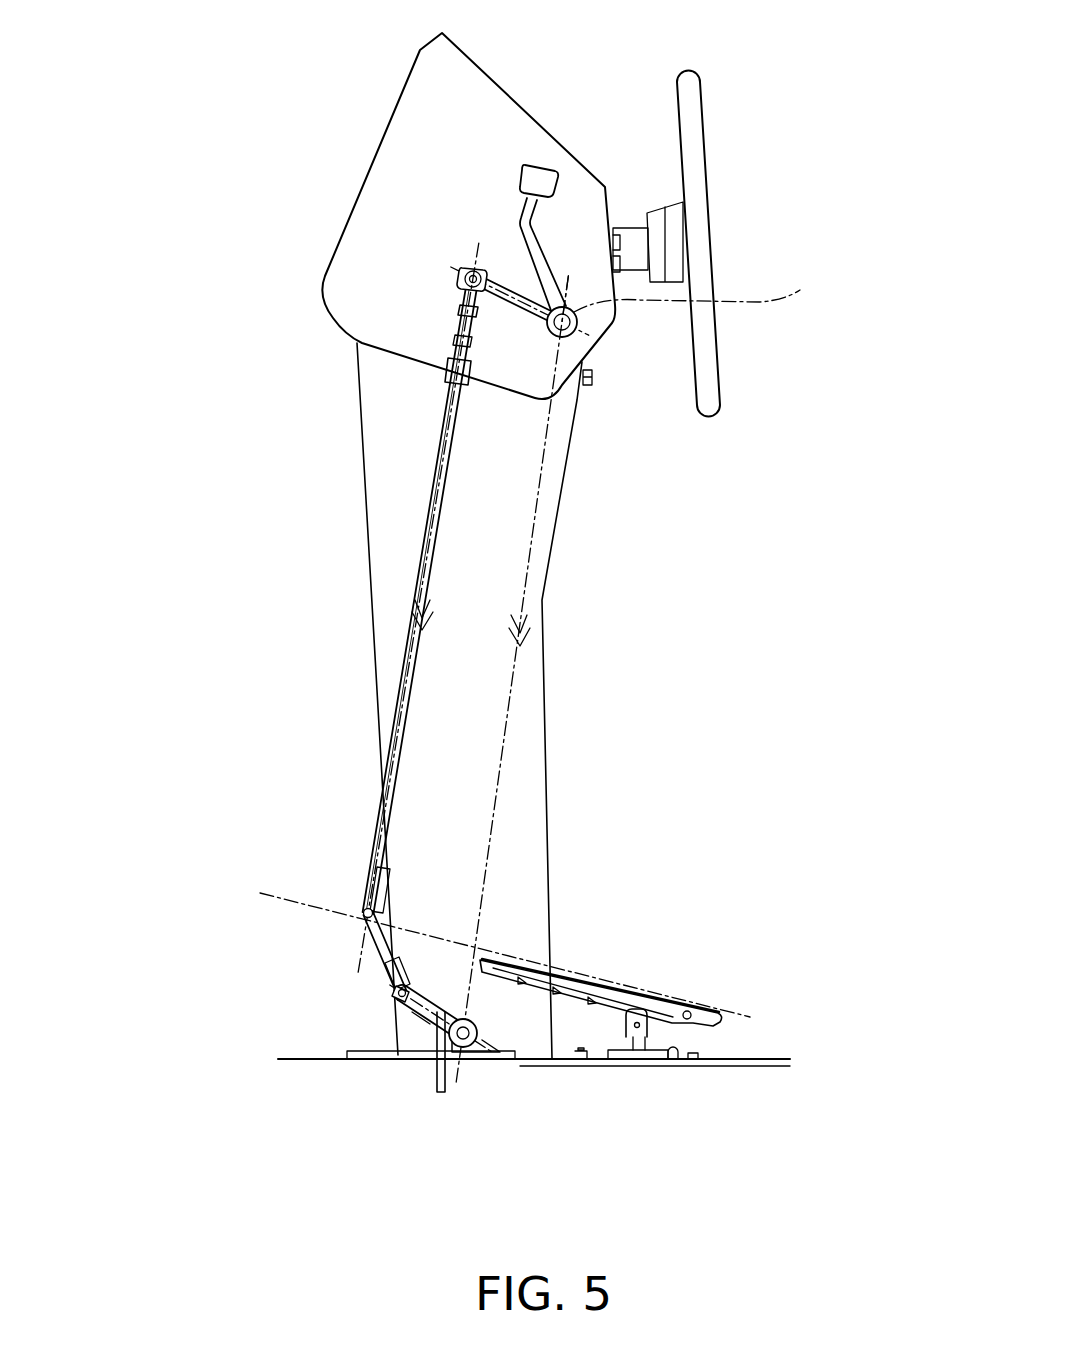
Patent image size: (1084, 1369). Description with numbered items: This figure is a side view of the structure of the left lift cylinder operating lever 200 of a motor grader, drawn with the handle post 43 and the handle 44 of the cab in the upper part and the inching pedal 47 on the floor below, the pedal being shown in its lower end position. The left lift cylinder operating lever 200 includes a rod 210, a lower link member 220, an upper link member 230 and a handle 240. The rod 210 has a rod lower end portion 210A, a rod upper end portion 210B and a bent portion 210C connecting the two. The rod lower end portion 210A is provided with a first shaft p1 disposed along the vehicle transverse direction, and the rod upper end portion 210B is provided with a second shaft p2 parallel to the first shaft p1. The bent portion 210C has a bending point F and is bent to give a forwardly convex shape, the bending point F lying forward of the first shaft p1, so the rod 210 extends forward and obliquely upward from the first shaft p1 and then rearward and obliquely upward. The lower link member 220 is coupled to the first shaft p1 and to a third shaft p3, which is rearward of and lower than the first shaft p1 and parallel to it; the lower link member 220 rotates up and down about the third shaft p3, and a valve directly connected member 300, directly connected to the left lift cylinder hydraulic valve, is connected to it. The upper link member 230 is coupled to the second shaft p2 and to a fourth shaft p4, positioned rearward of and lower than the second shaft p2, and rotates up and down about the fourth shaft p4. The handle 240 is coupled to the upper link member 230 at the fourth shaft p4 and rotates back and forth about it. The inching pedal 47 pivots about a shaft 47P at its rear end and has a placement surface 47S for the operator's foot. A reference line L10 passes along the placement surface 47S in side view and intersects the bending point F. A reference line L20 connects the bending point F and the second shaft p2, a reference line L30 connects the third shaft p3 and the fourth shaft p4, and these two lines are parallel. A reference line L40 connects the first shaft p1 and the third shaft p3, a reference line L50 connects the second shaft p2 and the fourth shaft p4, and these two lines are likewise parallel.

The handle post 43 is at (455, 47).
The handle 44 is at (683, 70).
The left lift cylinder operating lever 200 is at (538, 164).
The handle 240 is at (527, 200).
The upper link member 230 is at (505, 272).
The rod 210 is at (427, 553).
The rod upper end portion 210B is at (462, 300).
The bent portion 210C is at (375, 940).
The rod lower end portion 210A is at (392, 990).
The lower link member 220 is at (425, 1022).
The valve directly connected member 300 is at (433, 1083).
The inching pedal 47 is at (708, 1015).
The placement surface 47S is at (593, 970).
The shaft 47P is at (640, 1022).
The first shaft p1 is at (398, 998).
The second shaft p2 is at (465, 278).
The third shaft p3 is at (472, 1045).
The fourth shaft p4 is at (575, 330).
The bending point F is at (374, 912).
The reference line L10 is at (310, 898).
The reference line L20 is at (437, 497).
The reference line L30 is at (537, 500).
The reference line L40 is at (483, 1040).
The reference line L50 is at (716, 289).